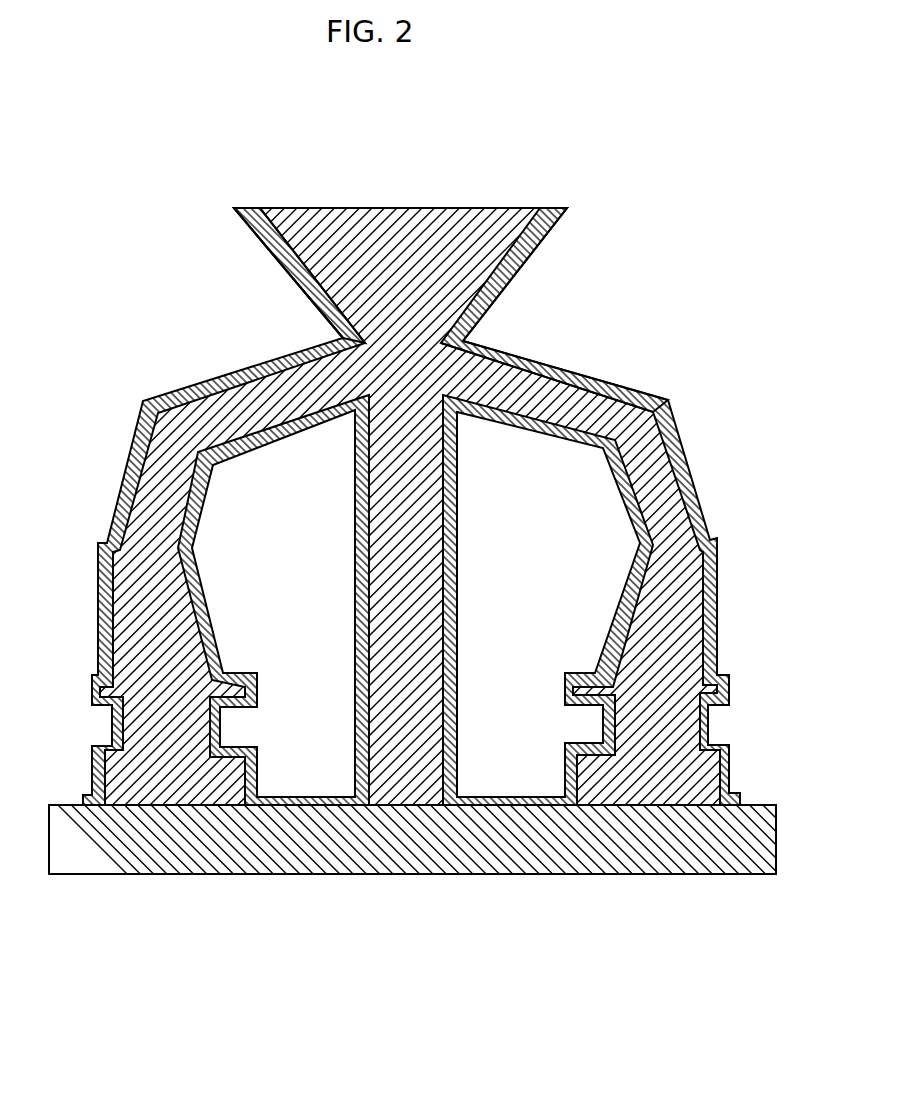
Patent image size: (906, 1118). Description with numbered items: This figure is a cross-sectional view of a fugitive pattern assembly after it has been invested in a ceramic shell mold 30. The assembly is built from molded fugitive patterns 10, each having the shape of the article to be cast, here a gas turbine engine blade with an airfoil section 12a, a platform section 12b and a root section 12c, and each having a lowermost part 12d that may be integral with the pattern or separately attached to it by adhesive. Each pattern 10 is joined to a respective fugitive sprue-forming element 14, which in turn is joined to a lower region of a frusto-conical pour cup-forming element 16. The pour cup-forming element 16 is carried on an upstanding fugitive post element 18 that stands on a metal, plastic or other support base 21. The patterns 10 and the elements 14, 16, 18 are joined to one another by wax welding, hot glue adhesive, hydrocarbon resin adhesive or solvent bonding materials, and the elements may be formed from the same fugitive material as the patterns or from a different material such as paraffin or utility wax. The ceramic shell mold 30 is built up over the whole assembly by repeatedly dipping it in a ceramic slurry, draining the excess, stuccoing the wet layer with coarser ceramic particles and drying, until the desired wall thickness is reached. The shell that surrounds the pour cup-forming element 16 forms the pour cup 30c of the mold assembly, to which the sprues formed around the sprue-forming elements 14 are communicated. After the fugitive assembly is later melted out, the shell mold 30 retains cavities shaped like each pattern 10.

The fugitive pattern 10 is at (684, 584).
The airfoil section 12a is at (685, 620).
The platform section 12b is at (713, 687).
The root section 12c is at (690, 716).
The lowermost part 12d is at (710, 777).
The sprue-forming element 14 is at (530, 387).
The pour cup-forming element 16 is at (462, 210).
The post element 18 is at (420, 541).
The support base 21 is at (147, 875).
The ceramic shell mold 30 is at (630, 390).
The pour cup 30c is at (278, 260).